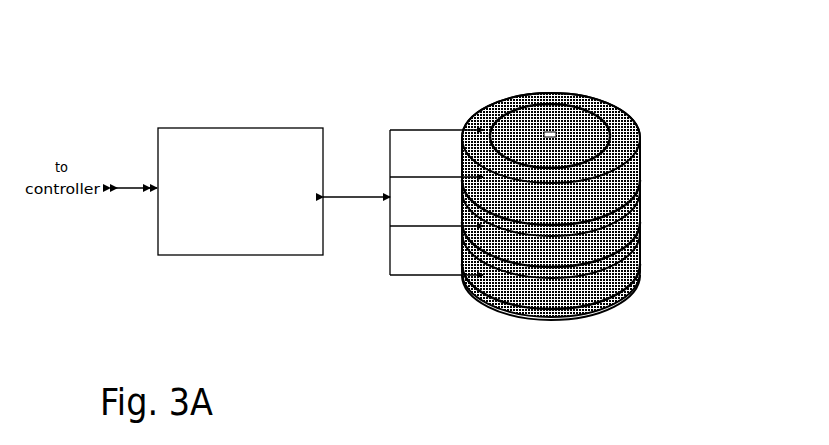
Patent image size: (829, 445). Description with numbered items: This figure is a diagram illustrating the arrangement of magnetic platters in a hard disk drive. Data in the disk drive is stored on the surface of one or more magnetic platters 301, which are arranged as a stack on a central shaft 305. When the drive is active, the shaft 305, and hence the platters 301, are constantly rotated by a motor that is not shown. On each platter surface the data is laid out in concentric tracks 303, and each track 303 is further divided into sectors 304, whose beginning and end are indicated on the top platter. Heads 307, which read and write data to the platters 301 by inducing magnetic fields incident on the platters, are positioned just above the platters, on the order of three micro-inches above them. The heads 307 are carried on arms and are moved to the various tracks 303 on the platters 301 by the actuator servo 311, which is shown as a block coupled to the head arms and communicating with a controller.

The magnetic platters 301 is at (655, 312).
The tracks 303 is at (597, 133).
The sectors 304 is at (553, 97).
The shaft 305 is at (550, 132).
The heads 307 is at (478, 127).
The actuator servo 311 is at (240, 183).